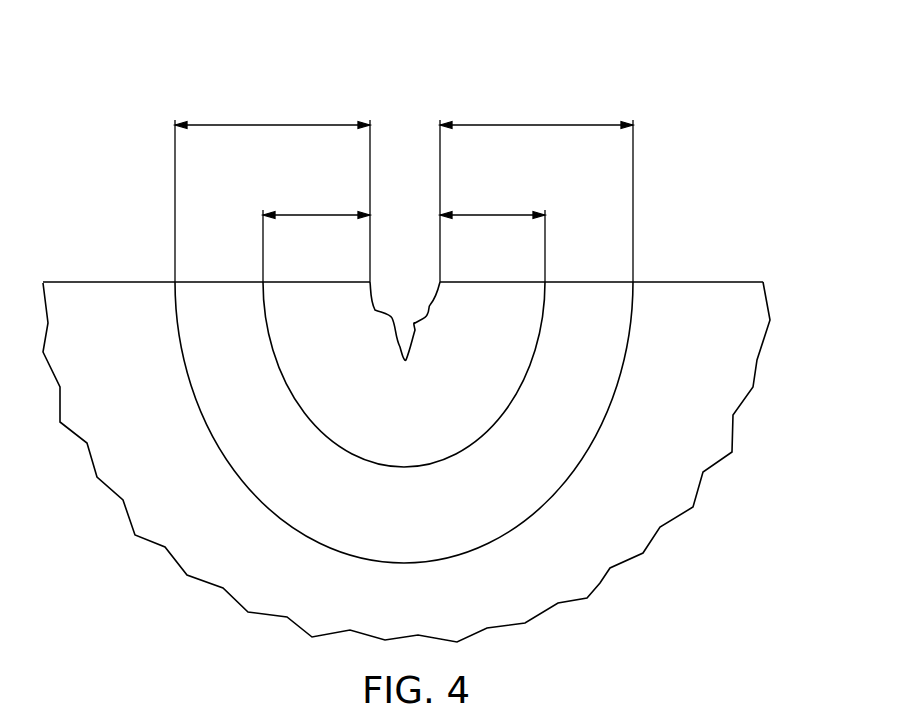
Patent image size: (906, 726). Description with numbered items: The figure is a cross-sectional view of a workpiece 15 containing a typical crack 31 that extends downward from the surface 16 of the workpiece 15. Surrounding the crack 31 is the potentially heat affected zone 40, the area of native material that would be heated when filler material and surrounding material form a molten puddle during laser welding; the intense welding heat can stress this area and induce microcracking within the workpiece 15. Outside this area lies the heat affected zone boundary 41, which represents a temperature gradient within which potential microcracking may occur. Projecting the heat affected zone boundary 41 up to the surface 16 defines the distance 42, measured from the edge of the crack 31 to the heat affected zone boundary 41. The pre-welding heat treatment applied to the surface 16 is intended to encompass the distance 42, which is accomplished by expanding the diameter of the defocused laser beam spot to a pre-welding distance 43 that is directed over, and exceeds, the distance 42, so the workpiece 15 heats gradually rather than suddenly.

The workpiece 15 is at (146, 428).
The surface 16 is at (728, 282).
The crack 31 is at (415, 330).
The heat affected zone 40 is at (447, 431).
The heat affected zone boundary 41 is at (515, 402).
The distance 42 is at (316, 215).
The pre-welding distance 43 is at (268, 125).